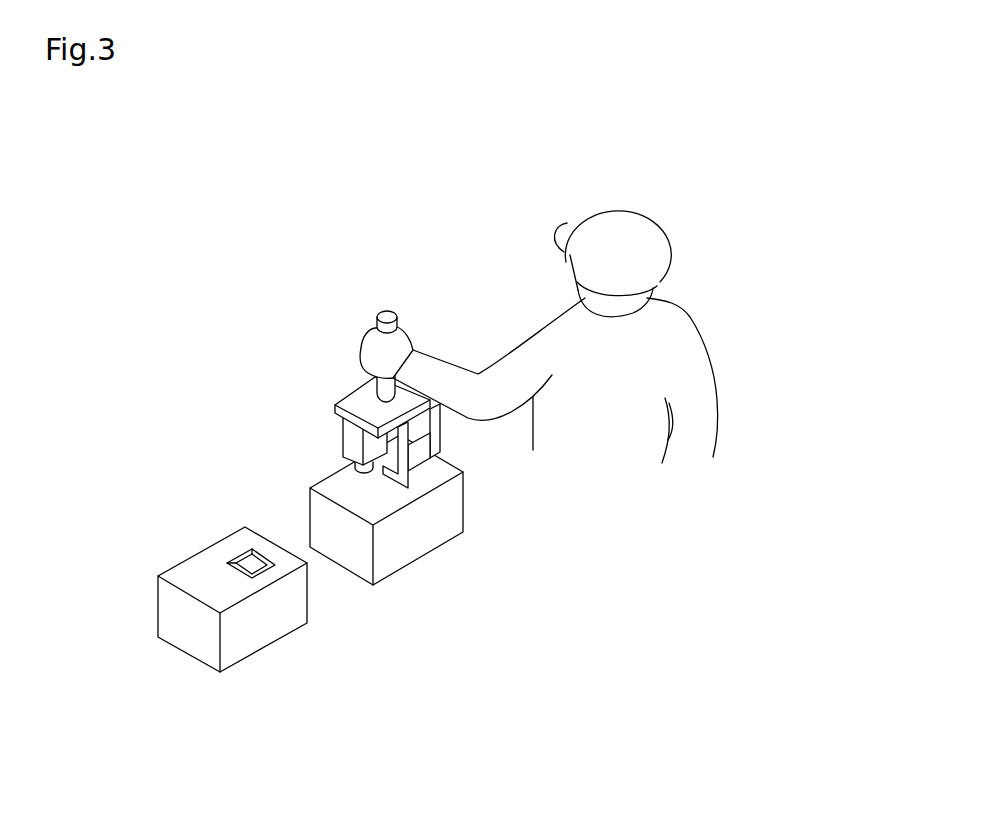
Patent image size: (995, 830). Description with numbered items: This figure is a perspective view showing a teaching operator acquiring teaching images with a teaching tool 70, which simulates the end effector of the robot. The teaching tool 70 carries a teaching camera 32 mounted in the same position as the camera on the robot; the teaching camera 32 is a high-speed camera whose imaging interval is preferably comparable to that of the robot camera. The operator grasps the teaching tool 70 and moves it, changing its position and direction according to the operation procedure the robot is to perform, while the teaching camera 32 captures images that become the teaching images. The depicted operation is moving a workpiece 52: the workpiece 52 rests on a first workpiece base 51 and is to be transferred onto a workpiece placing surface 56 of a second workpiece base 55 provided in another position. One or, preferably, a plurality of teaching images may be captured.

The teaching tool 70 is at (338, 386).
The teaching camera 32 is at (352, 435).
The workpiece 52 is at (417, 475).
The first workpiece base 51 is at (410, 542).
The second workpiece base 55 is at (267, 630).
The workpiece placing surface 56 is at (247, 563).